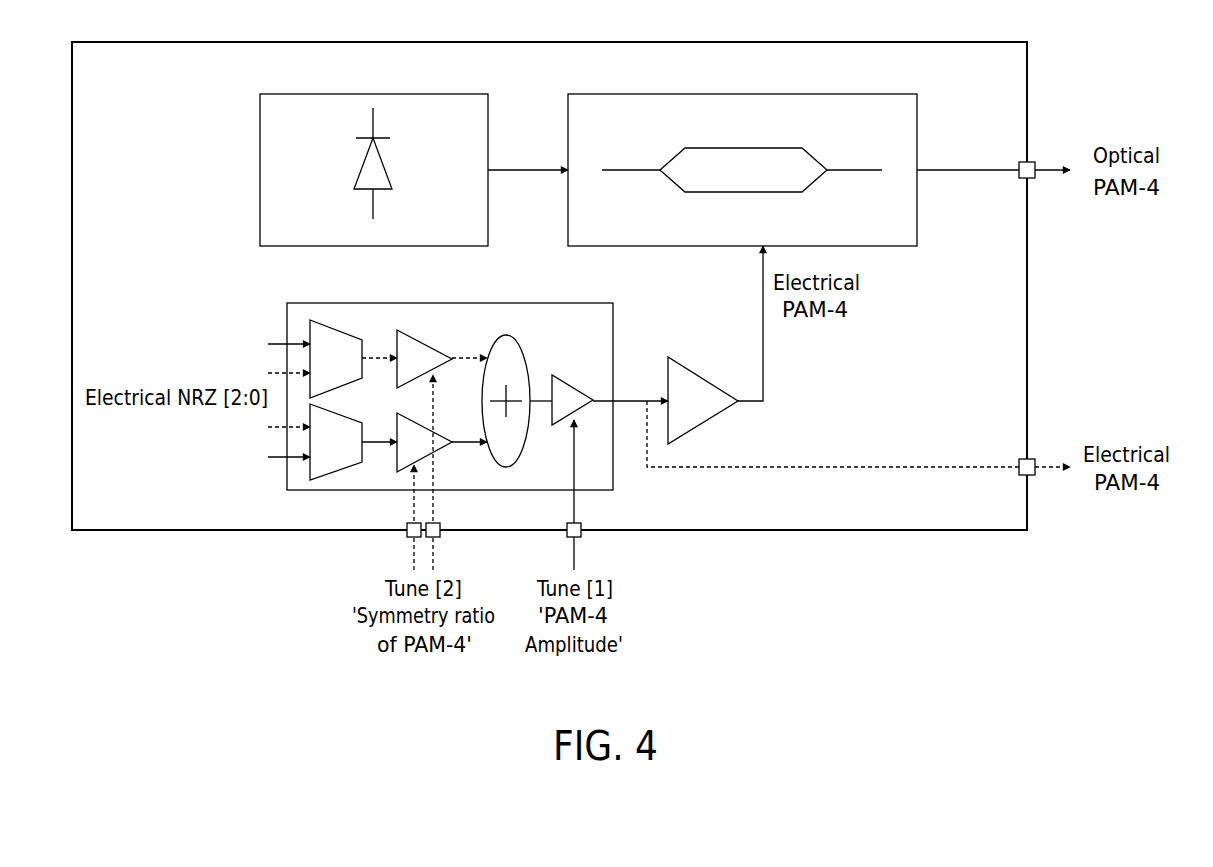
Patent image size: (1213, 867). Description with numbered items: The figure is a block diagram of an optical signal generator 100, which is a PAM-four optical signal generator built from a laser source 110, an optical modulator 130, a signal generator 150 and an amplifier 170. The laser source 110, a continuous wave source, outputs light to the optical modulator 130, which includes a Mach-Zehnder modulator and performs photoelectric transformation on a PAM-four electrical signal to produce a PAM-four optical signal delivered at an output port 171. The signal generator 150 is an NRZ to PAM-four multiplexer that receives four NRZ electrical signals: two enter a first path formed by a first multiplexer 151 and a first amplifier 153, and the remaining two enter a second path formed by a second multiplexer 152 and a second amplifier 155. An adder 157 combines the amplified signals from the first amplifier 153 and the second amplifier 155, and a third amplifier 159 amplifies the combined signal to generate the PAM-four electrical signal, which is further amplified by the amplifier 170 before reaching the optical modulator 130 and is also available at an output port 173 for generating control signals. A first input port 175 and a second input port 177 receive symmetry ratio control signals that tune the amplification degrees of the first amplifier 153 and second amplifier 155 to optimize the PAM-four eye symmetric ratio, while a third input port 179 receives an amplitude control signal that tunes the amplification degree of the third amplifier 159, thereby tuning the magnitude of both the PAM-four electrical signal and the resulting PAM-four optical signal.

The optical signal generator 100 is at (550, 42).
The laser source 110 is at (373, 94).
The optical modulator 130 is at (745, 94).
The signal generator 150 is at (555, 303).
The first multiplexer 151 is at (337, 330).
The second multiplexer 152 is at (337, 470).
The first amplifier 153 is at (397, 335).
The second amplifier 155 is at (440, 455).
The adder 157 is at (502, 337).
The third amplifier 159 is at (596, 395).
The amplifier 170 is at (705, 375).
The output port 171 is at (1036, 164).
The output port 173 is at (1036, 460).
The first input port 175 is at (408, 537).
The second input port 177 is at (440, 537).
The third input port 179 is at (580, 537).